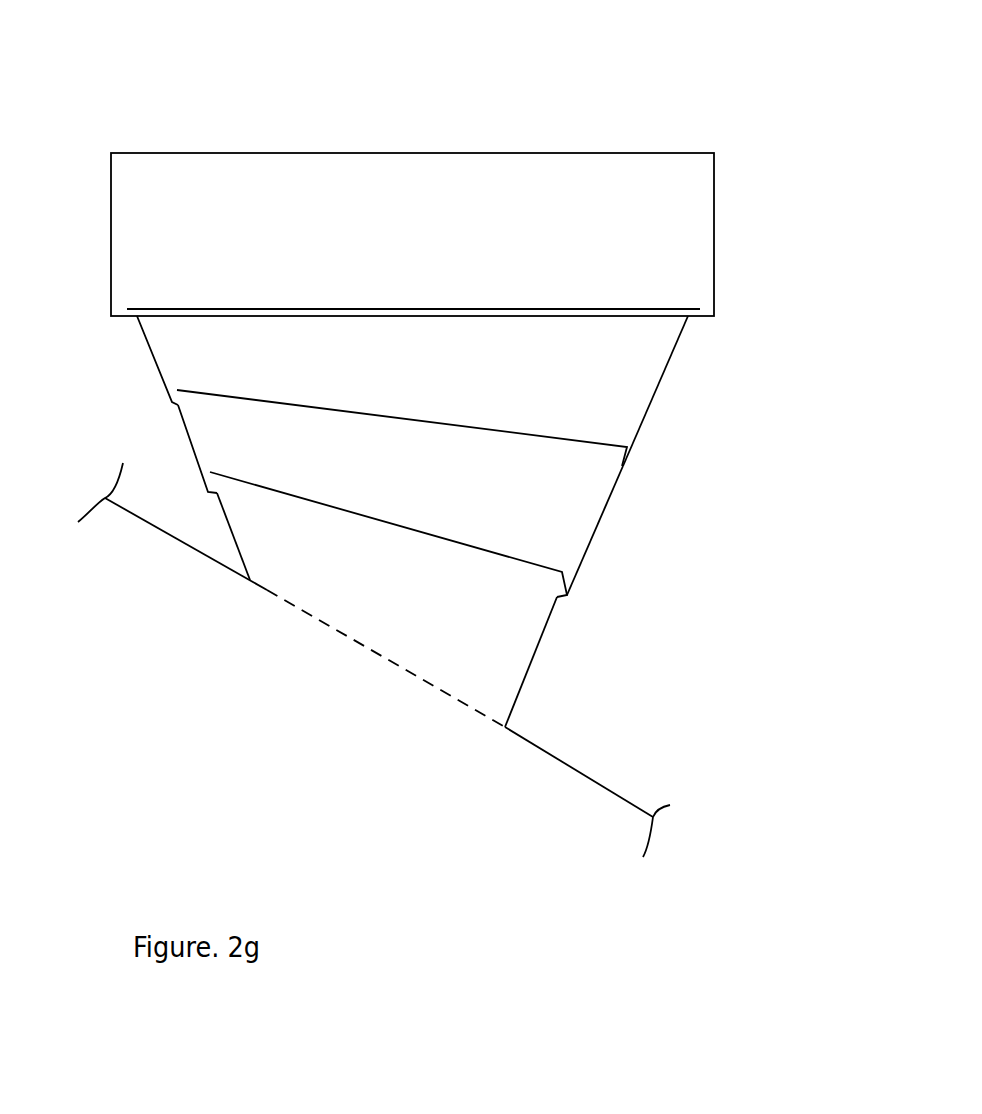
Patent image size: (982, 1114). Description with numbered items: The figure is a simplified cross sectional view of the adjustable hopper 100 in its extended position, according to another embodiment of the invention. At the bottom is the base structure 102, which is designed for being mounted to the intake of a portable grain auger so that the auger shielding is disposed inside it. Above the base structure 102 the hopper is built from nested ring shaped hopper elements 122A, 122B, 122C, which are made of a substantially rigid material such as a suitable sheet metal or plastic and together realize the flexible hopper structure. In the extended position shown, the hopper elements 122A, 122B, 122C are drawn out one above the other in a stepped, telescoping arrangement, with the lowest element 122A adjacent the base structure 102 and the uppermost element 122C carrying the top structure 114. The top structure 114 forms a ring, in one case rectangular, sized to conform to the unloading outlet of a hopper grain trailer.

The adjustable hopper 100 is at (708, 100).
The top structure 114 is at (693, 258).
The nested ring shaped hopper element 122C is at (622, 397).
The nested ring shaped hopper element 122B is at (562, 540).
The nested ring shaped hopper element 122A is at (512, 663).
The base structure 102 is at (537, 790).